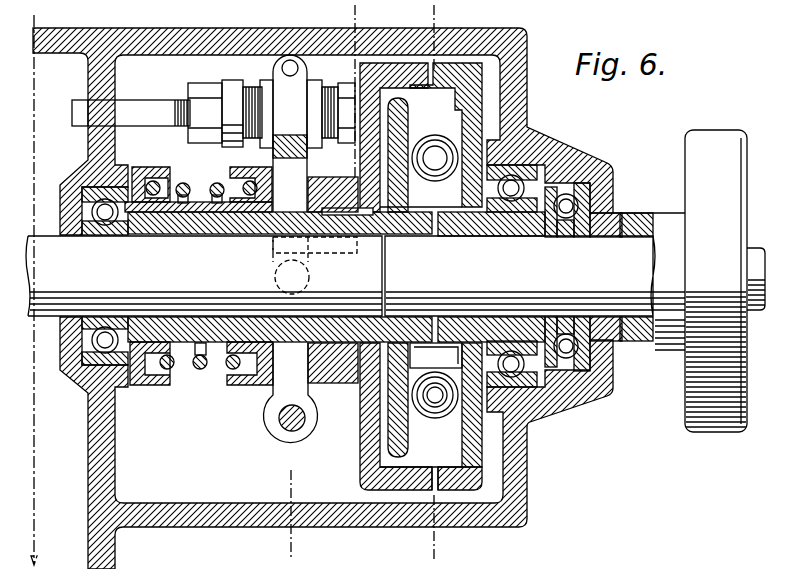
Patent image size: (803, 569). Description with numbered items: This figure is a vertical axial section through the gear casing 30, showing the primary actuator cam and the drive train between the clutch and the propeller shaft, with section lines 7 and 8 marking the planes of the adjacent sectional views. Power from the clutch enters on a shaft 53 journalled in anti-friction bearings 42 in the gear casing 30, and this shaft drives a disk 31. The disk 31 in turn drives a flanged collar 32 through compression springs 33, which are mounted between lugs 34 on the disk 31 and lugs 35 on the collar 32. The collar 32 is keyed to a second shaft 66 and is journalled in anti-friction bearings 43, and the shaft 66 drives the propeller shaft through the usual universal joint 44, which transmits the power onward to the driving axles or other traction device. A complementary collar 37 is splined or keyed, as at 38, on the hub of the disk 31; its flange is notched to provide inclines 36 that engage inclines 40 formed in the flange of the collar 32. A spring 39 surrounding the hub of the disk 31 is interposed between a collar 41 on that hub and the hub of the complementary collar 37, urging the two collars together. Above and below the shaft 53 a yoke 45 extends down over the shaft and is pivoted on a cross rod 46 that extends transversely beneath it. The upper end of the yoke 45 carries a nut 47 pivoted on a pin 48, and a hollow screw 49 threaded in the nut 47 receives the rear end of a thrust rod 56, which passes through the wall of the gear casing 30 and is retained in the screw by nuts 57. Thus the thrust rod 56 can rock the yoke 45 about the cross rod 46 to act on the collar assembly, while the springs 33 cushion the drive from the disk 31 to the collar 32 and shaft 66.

The section line 7— 7 is at (436, 18).
The section line 8— 8 is at (357, 18).
The gear casing 30 is at (512, 510).
The disk 31 is at (407, 410).
The flanged collar 32 is at (470, 450).
The compression springs 33 is at (437, 375).
The lugs 34 is at (416, 404).
The lugs 35 is at (437, 122).
The inclines 36 is at (383, 465).
The complementary collar 37 is at (368, 410).
The spline or key 38 is at (363, 216).
The spring 39 is at (200, 372).
The inclines 40 is at (435, 482).
The collar 41 is at (138, 386).
The anti-friction bearings 42 is at (87, 367).
The anti-friction bearings 43 is at (560, 180).
The universal joint 44 is at (710, 387).
The yoke 45 is at (290, 383).
The cross rod 46 is at (283, 425).
The nut 47 is at (268, 108).
The pin 48 is at (298, 68).
The hollow screw 49 is at (237, 127).
The shaft 53 is at (204, 276).
The thrust rod 56 is at (160, 112).
The nuts 57 is at (343, 117).
The shaft 66 is at (535, 281).